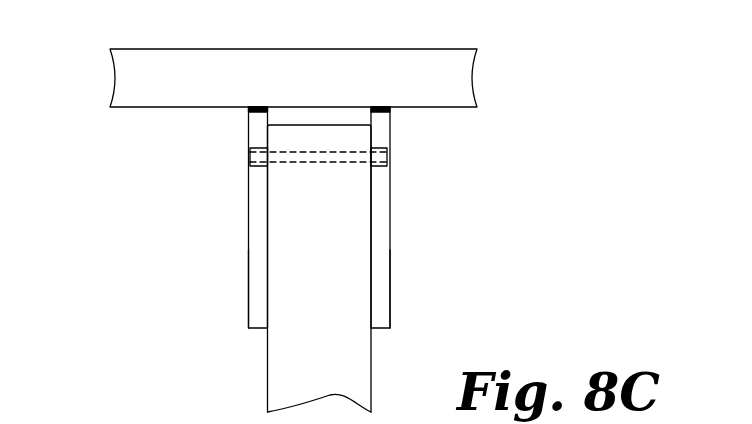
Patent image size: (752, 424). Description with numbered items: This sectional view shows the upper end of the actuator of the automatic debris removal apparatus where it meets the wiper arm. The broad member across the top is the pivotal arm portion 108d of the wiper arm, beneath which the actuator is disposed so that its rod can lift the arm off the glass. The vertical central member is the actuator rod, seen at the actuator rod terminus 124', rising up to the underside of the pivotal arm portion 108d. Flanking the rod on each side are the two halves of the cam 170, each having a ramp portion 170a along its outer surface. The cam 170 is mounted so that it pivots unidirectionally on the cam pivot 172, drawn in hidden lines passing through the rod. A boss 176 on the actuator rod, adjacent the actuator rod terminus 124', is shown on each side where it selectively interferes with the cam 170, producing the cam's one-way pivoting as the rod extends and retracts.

The pivotal arm portion 108d is at (138, 124).
The actuator rod terminus 124' is at (287, 207).
The cam 170 is at (248, 228).
The ramp portion 170a is at (256, 289).
The cam pivot 172 is at (321, 163).
The boss 176 is at (253, 168).